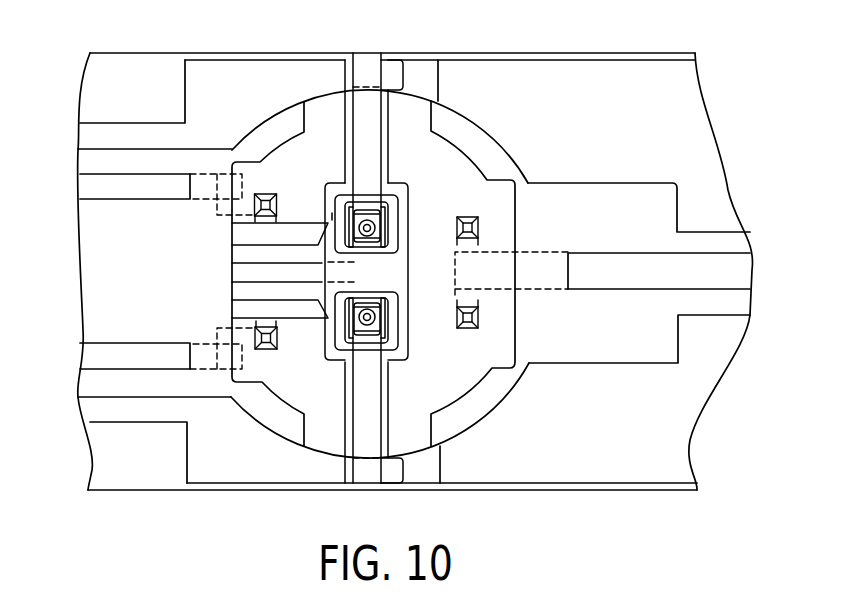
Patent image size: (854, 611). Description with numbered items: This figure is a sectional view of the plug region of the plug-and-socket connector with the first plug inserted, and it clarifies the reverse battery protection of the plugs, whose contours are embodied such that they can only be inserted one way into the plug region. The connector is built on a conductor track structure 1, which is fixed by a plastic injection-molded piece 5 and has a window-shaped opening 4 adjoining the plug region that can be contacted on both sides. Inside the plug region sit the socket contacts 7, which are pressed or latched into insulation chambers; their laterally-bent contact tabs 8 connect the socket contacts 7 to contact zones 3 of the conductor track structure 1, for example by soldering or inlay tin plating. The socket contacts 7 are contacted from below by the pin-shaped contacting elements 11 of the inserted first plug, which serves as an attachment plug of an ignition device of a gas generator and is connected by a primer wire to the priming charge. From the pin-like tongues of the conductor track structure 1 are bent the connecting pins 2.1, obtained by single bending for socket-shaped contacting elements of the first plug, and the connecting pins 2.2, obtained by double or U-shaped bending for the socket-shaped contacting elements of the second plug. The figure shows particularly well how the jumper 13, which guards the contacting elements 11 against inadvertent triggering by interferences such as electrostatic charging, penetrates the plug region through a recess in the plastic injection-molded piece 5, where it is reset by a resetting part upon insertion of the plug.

The conductor track structure 1 is at (540, 97).
The contact zones 3 is at (333, 75).
The window-shaped opening 4 is at (287, 160).
The plastic injection-molded piece 5 is at (640, 193).
The socket contacts 7 is at (333, 355).
The contact tabs 8 is at (368, 72).
The contacting elements 11 is at (368, 338).
The jumper 13 is at (242, 253).
The connecting pins 2.1 is at (472, 332).
The connecting pins 2.2 is at (263, 352).